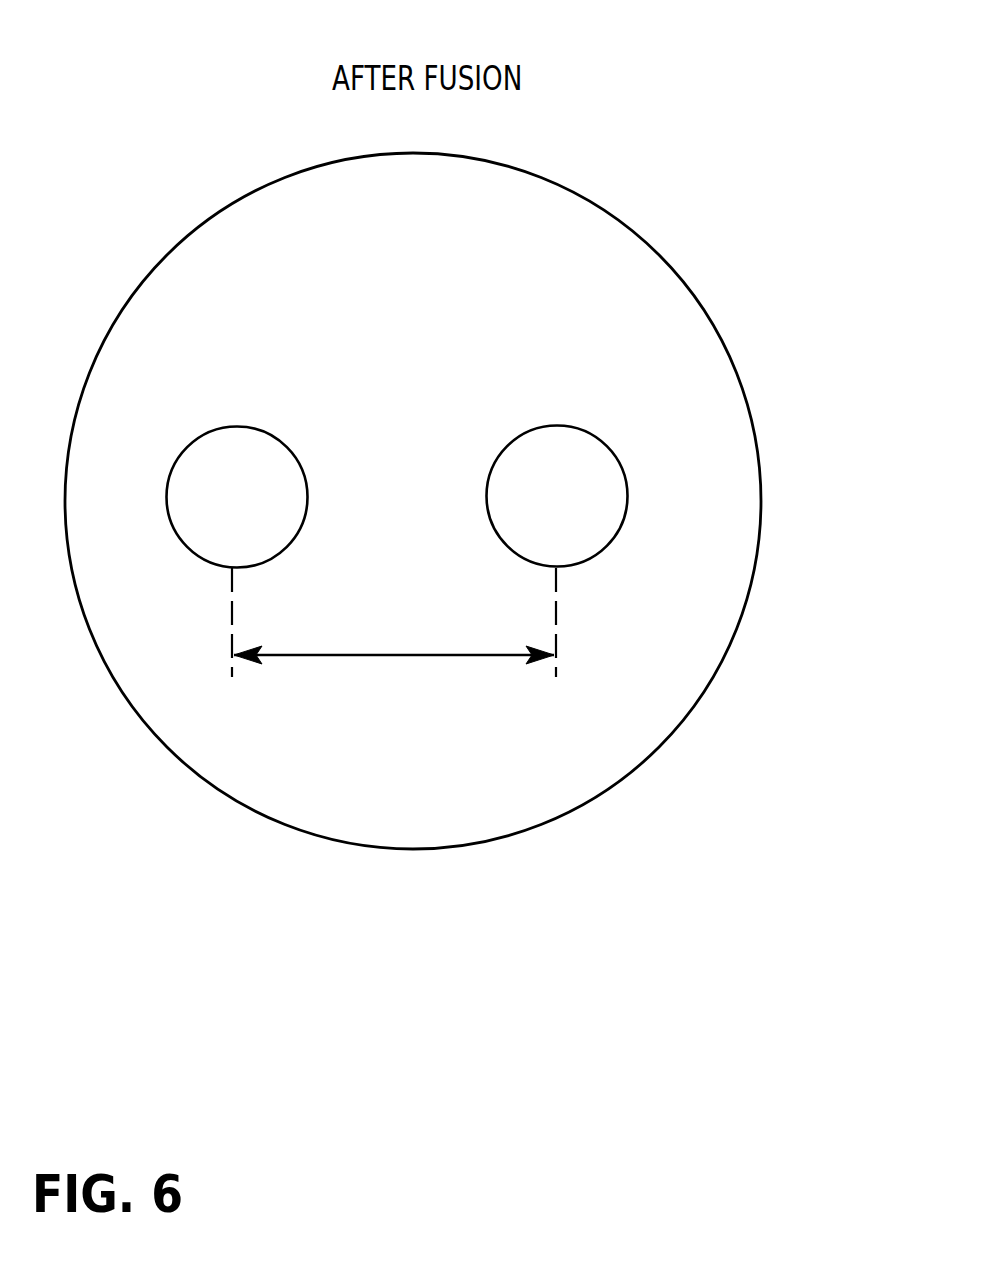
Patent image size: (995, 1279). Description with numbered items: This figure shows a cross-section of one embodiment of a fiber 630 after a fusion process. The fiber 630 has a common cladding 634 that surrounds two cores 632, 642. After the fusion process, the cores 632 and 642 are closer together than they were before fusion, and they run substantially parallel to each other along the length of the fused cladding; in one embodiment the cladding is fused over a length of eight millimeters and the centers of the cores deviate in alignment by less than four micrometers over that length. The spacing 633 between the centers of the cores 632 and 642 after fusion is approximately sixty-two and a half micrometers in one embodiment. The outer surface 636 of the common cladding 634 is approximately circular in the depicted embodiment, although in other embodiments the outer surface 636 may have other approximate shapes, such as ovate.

The fiber 630 is at (690, 108).
The outer surface 636 is at (668, 236).
The common cladding 634 is at (429, 782).
The core 632 is at (262, 426).
The core 642 is at (583, 425).
The spacing 633 is at (356, 654).